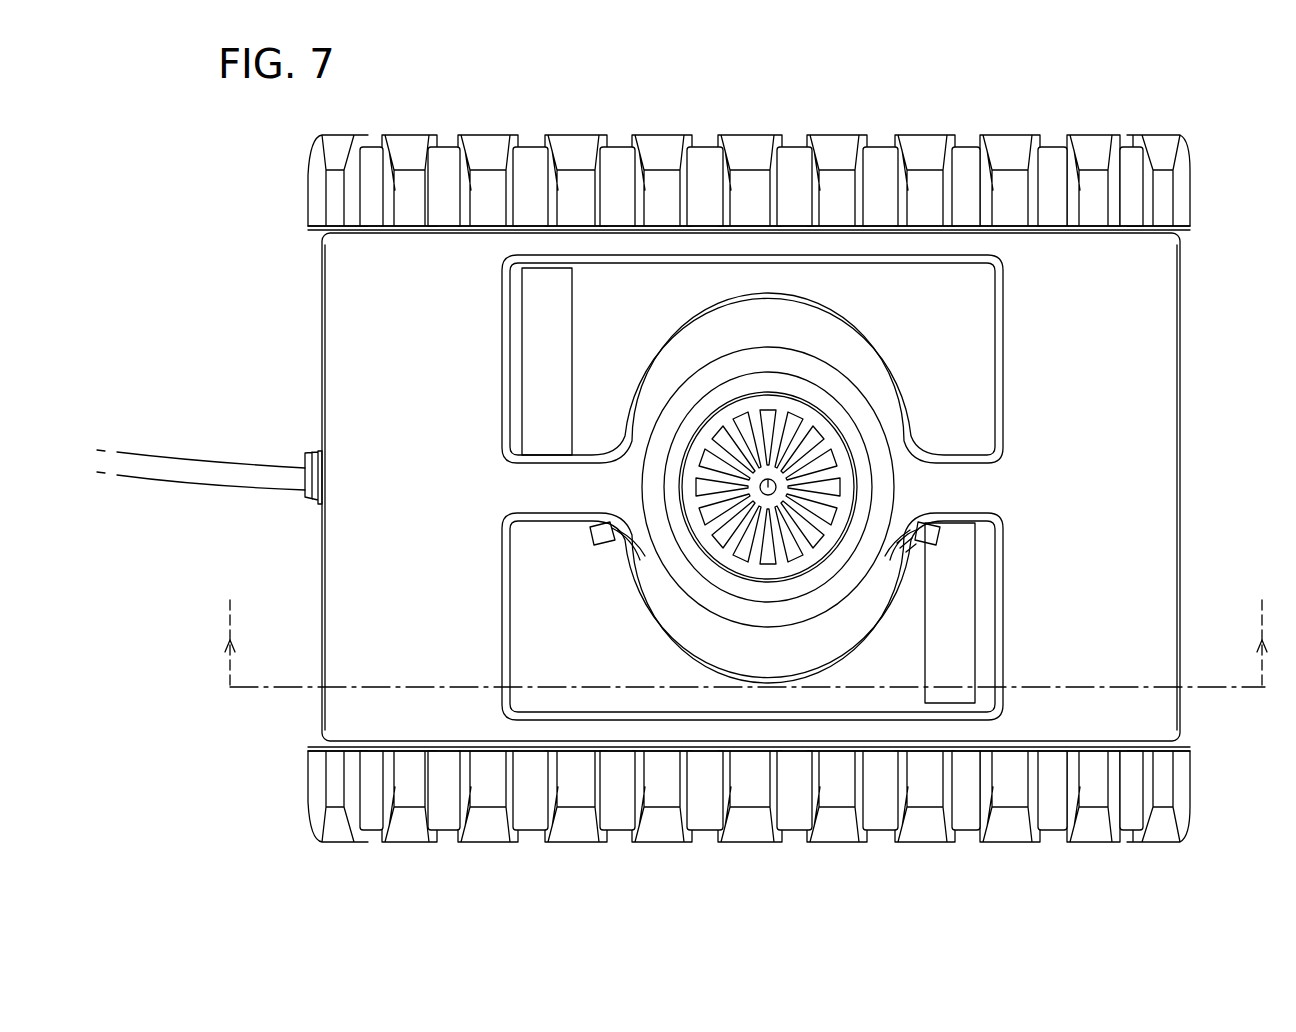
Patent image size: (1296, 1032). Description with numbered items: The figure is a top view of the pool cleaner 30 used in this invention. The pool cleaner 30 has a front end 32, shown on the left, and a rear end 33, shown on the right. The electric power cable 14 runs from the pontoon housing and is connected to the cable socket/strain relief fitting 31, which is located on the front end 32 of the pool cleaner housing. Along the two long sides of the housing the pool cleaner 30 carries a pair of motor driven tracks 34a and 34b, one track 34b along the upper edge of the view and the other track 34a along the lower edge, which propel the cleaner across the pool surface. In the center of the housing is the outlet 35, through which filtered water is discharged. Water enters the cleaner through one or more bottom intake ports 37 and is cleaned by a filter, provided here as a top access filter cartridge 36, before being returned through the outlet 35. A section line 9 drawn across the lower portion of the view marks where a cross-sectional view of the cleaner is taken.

The pool cleaner 30 is at (887, 85).
The cable socket/strain relief fitting 31 is at (311, 455).
The front end 32 is at (321, 291).
The rear end 33 is at (1185, 295).
The motor driven track 34a is at (655, 850).
The motor driven track 34b is at (712, 116).
The outlet 35 is at (776, 487).
The top access filter cartridge 36 is at (893, 645).
The bottom intake port 37 is at (962, 645).
The electric power cable 14 is at (211, 471).
The section line 9- 9 is at (744, 618).